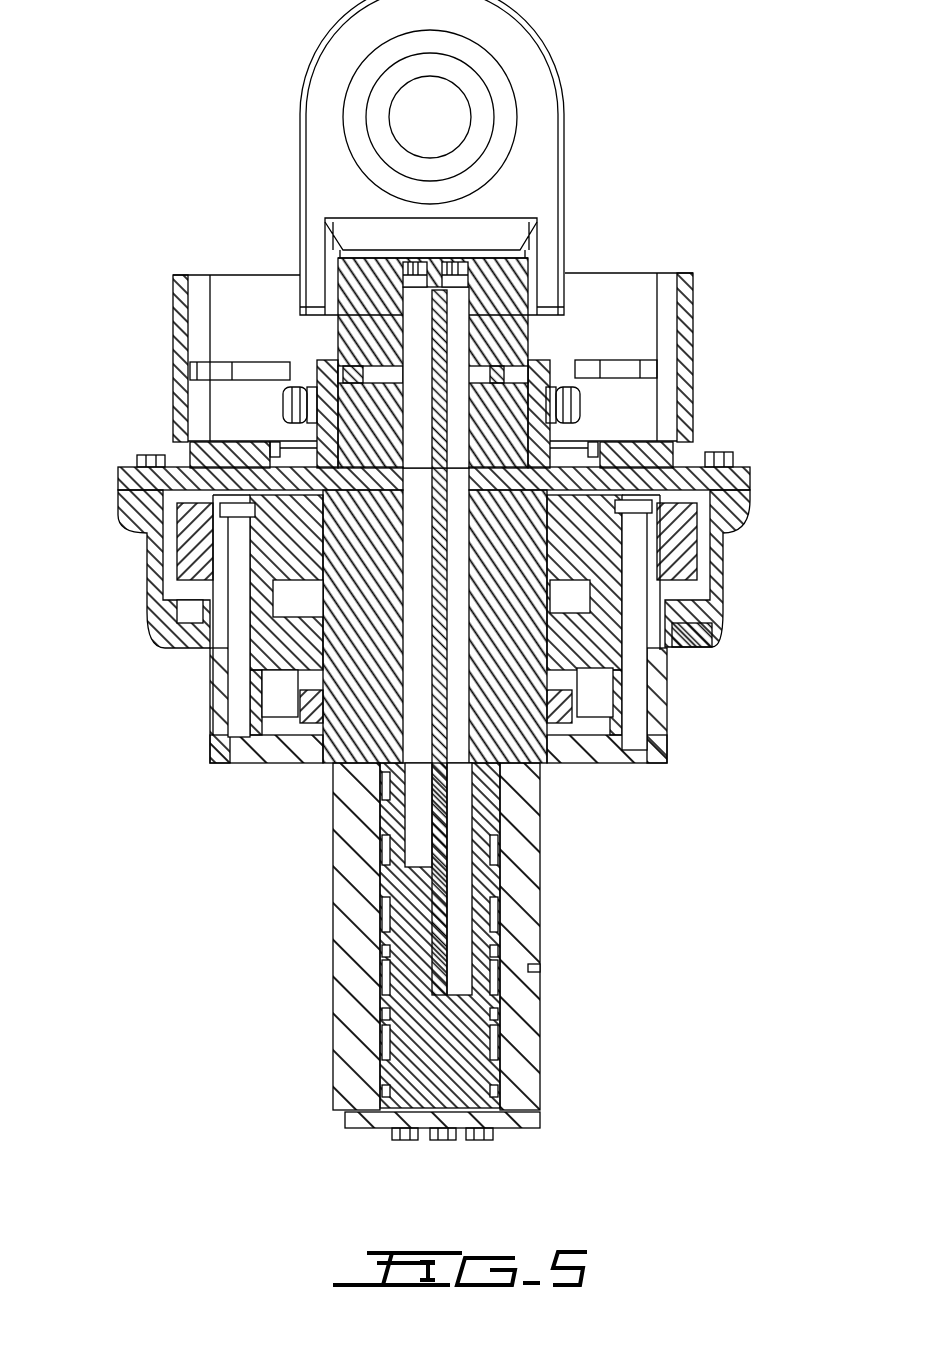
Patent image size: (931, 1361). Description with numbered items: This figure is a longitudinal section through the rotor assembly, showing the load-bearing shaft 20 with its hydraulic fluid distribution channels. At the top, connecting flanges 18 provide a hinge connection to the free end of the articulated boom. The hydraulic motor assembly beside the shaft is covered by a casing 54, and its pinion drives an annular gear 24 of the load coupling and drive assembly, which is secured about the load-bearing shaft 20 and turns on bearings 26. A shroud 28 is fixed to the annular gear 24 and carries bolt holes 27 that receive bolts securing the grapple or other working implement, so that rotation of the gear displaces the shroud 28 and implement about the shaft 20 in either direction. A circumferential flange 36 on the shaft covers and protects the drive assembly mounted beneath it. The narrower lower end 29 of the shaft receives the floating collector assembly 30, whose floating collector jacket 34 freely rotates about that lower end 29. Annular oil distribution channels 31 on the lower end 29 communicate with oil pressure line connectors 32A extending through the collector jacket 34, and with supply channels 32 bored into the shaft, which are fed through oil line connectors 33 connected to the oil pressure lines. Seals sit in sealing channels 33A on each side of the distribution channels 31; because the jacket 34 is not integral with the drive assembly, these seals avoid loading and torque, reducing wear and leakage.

The connecting flanges 18 is at (528, 90).
The load-bearing shaft 20 is at (505, 285).
The casing 54 is at (172, 318).
The oil line connectors 33 is at (283, 405).
The circumferential flange 36 is at (120, 481).
The annular gear 24 is at (670, 537).
The bearings 26 is at (290, 550).
The bolt holes 27 is at (243, 672).
The shroud 28 is at (220, 718).
The floating collector assembly 30 is at (297, 855).
The floating collector jacket 34 is at (385, 798).
The supply channels 32 is at (420, 787).
The oil pressure line connectors 32A is at (535, 968).
The annular oil distribution channels 31 is at (383, 852).
The sealing channels 33A is at (385, 1010).
The lower end 29 is at (360, 1112).